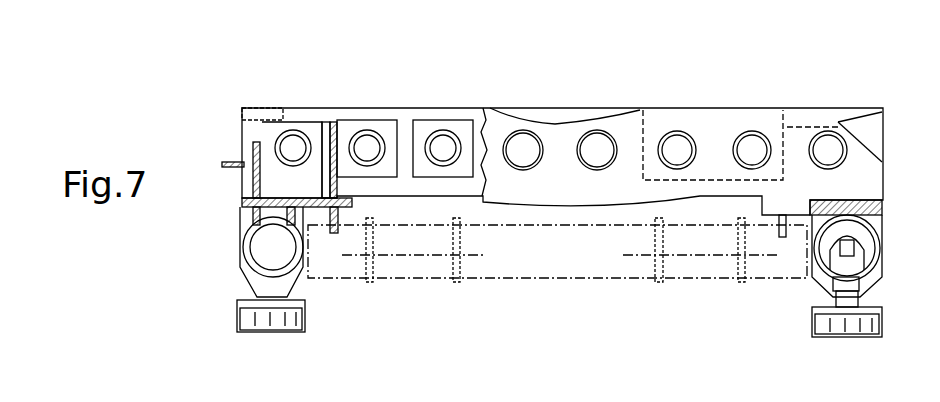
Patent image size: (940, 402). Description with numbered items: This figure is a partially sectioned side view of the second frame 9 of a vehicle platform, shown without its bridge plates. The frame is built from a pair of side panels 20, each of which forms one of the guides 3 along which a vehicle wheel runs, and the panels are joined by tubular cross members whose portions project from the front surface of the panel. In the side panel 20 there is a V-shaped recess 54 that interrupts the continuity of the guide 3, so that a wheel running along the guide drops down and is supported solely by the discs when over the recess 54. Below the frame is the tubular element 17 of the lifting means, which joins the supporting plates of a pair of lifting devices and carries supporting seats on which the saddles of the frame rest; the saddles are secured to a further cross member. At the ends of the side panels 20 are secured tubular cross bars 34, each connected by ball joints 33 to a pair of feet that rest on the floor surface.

The guide 3 is at (450, 108).
The second frame 9 is at (815, 72).
The tubular element 17 is at (557, 278).
The side panel 20 is at (652, 108).
The ball joint 33 is at (868, 252).
The cross bar 34 is at (248, 250).
The V-shaped recess 54 is at (575, 108).